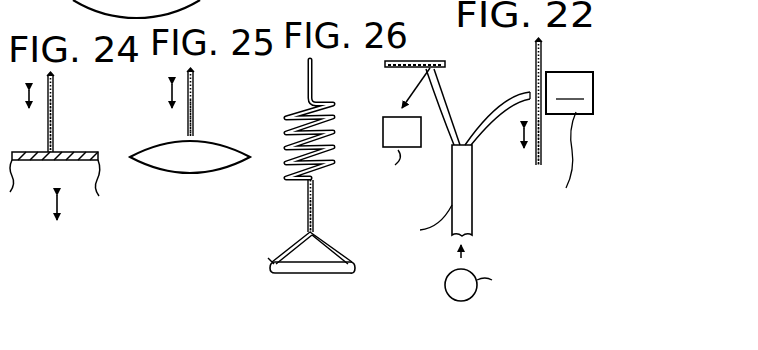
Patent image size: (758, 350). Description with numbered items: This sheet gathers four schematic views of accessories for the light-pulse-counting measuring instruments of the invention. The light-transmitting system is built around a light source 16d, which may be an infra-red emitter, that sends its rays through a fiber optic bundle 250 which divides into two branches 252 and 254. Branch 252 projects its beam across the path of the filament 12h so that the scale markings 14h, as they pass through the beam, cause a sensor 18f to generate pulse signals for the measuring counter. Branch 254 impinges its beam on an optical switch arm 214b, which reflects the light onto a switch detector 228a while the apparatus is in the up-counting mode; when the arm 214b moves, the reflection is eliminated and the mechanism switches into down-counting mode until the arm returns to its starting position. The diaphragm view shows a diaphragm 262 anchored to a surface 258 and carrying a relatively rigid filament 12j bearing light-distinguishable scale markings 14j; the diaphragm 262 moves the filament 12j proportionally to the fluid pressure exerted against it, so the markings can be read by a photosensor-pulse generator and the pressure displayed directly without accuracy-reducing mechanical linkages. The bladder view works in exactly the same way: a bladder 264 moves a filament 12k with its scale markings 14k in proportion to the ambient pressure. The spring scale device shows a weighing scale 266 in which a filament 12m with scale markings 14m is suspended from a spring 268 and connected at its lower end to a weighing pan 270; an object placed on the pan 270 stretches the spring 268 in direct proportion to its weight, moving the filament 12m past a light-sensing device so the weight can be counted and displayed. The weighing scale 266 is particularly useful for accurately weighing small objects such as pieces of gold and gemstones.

In FIG. 24, the filament 12j is at (54, 90).
In FIG. 24, the scale markings 14j is at (54, 120).
In FIG. 24, the diaphragm 262 is at (91, 150).
In FIG. 24, the surface 258 is at (4, 205).
In FIG. 25, the filament 12k is at (197, 94).
In FIG. 25, the scale markings 14k is at (195, 126).
In FIG. 25, the bladder 264 is at (185, 178).
In FIG. 26, the spring 268 is at (290, 116).
In FIG. 26, the filament 12m is at (306, 198).
In FIG. 26, the scale markings 14m is at (306, 204).
In FIG. 26, the weighing pan 270 is at (300, 276).
In FIG. 26, the weighing scale 266 is at (268, 258).
In FIG. 22, the optical switch arm 214b is at (420, 58).
In FIG. 22, the switch detector 228a is at (383, 118).
In FIG. 22, the branch 254 is at (443, 90).
In FIG. 22, the branch 252 is at (510, 82).
In FIG. 22, the fiber optic bundle 250 is at (472, 205).
In FIG. 22, the filament 12h is at (545, 50).
In FIG. 22, the scale markings 14h is at (536, 154).
In FIG. 22, the sensor 18f is at (564, 139).
In FIG. 22, the light source 16d is at (448, 292).